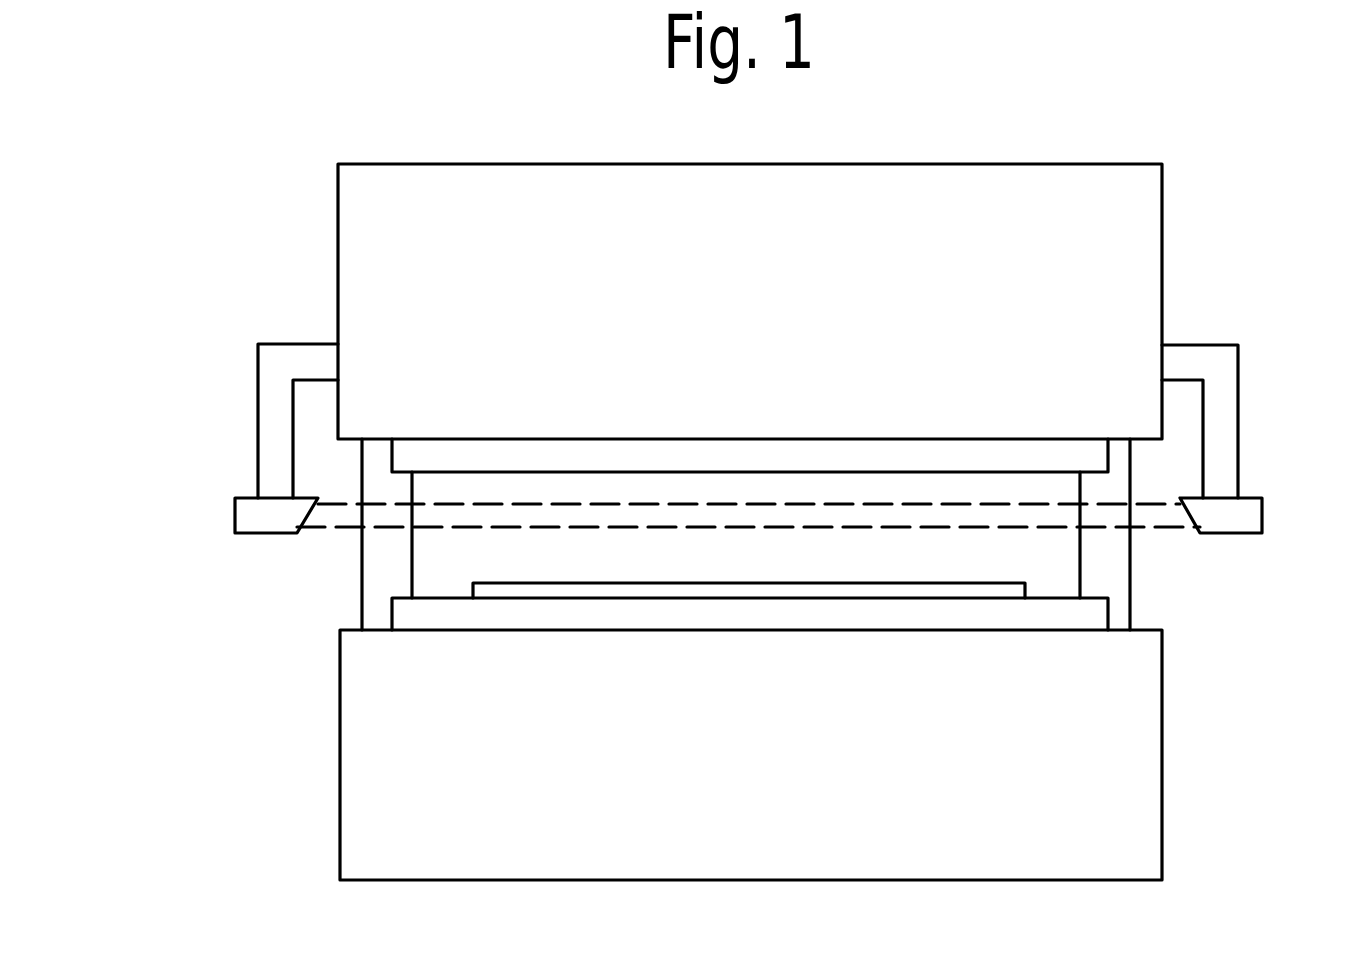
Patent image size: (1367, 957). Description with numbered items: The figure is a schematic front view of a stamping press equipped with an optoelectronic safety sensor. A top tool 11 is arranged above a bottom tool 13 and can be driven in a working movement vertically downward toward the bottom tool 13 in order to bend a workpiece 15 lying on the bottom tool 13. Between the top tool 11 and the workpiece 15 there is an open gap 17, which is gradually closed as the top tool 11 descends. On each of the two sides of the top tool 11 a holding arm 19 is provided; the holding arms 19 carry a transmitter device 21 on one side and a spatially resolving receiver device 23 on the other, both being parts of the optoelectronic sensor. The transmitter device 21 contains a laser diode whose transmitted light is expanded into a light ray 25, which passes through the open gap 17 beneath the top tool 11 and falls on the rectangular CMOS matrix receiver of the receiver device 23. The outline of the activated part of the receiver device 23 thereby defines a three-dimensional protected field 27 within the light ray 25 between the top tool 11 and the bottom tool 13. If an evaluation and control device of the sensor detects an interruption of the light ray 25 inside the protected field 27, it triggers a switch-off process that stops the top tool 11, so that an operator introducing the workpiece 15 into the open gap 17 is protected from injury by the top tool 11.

The top tool 11 is at (985, 458).
The bottom tool 13 is at (972, 610).
The workpiece 15 is at (803, 592).
The open gap 17 is at (430, 554).
The holding arm 19 is at (267, 372).
The transmitter device 21 is at (235, 513).
The receiver device 23 is at (1262, 515).
The light ray 25 is at (545, 504).
The protected field 27 is at (827, 512).